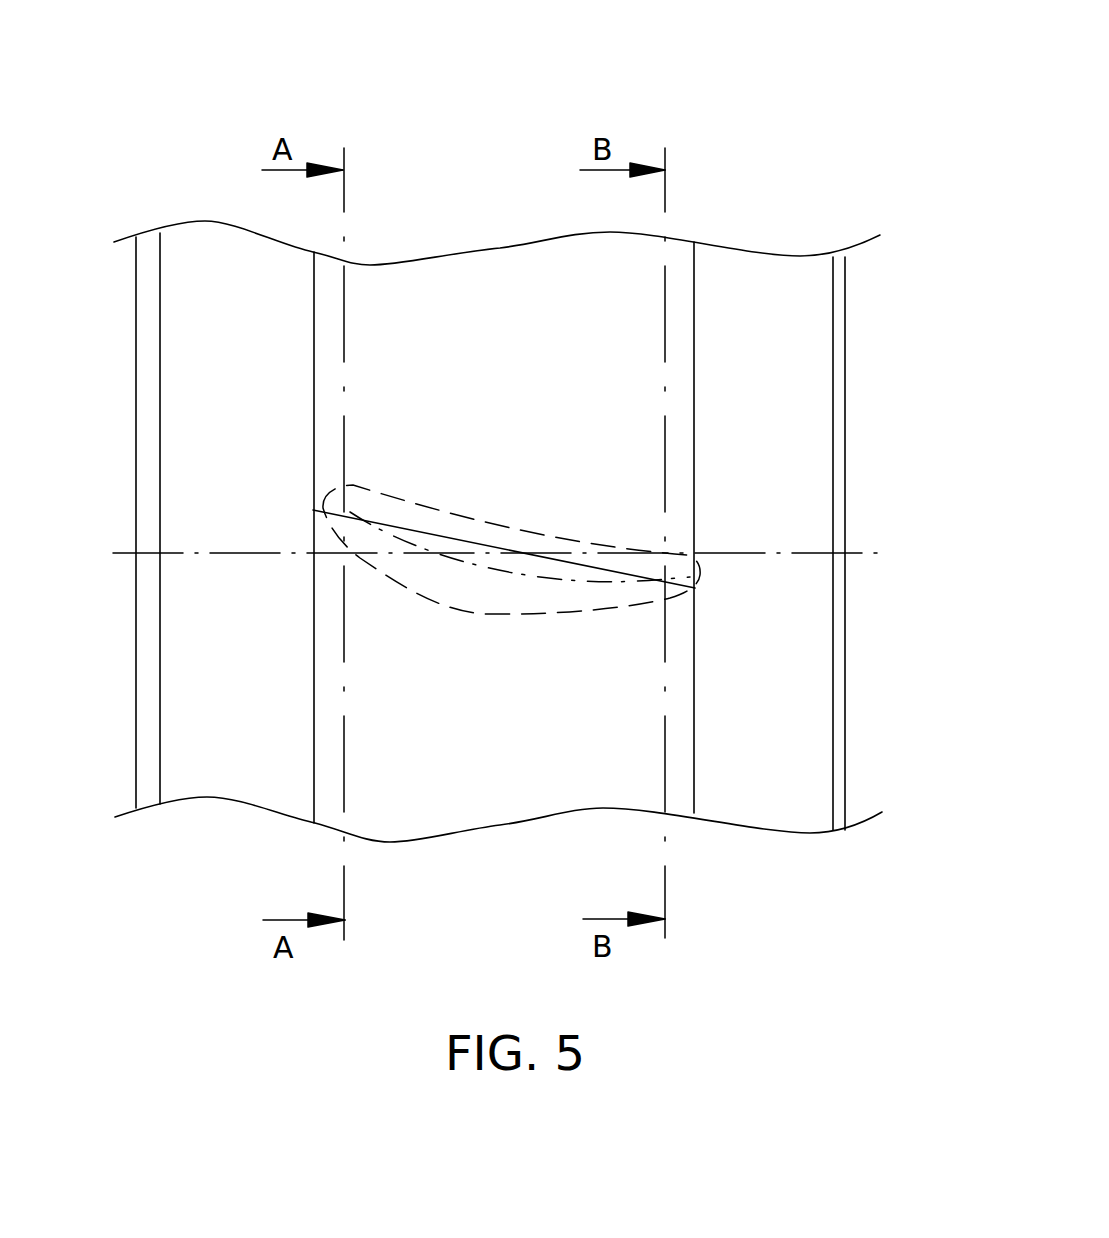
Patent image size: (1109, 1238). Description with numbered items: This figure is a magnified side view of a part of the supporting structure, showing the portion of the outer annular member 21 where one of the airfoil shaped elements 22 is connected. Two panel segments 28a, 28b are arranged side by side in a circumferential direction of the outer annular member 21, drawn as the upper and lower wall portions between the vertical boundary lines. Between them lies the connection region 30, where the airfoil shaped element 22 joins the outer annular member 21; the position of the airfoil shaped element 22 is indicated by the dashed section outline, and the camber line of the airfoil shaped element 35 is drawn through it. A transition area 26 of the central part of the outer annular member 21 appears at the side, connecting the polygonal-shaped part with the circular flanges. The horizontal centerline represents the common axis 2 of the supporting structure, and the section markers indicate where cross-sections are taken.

The outer annular member 21 is at (810, 49).
The airfoil shaped element 22 is at (400, 495).
The connection region 30 is at (470, 567).
The camber line of the airfoil shaped element 35 is at (470, 567).
The panel segment 28a is at (573, 350).
The panel segment 28b is at (523, 702).
The transition area 26 is at (772, 280).
The common axis 2 is at (862, 553).